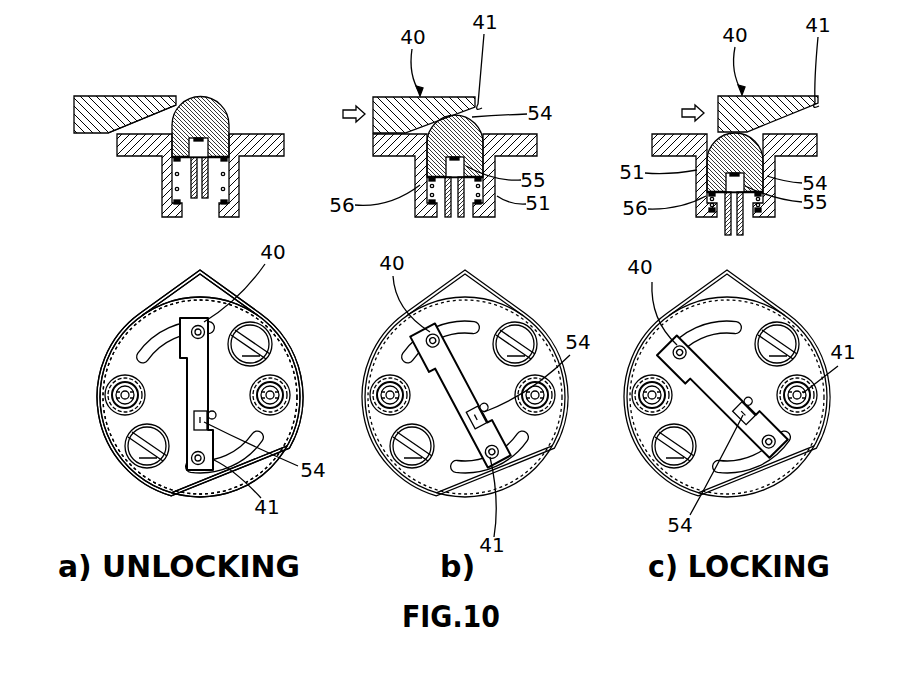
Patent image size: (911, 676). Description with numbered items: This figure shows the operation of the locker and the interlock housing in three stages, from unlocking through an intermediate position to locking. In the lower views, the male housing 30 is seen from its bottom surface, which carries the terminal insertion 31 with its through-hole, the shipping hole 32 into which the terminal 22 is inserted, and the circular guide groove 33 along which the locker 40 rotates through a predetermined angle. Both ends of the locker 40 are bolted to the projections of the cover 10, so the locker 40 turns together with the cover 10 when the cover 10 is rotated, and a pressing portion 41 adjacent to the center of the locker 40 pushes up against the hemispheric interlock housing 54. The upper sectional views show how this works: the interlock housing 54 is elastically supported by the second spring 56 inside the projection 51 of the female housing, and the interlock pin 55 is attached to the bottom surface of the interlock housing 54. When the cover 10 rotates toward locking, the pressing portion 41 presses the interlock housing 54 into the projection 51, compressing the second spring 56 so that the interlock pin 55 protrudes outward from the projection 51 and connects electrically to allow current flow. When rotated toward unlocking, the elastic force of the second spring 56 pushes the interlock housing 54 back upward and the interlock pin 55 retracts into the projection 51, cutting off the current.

The cover 10 is at (137, 305).
The terminal 22 is at (216, 415).
The male housing 30 is at (103, 345).
The terminal insertion 31 is at (285, 390).
The shipping hole 32 is at (256, 340).
The guide groove 33 is at (175, 328).
The locker 40 is at (106, 92).
The pressing portion 41 is at (148, 120).
The projection 51 is at (241, 176).
The interlock housing 54 is at (208, 98).
The interlock pin 55 is at (206, 148).
The second spring 56 is at (164, 170).